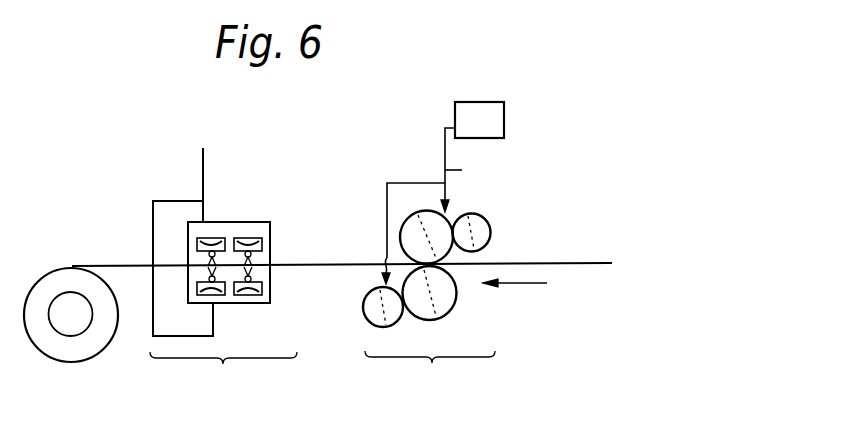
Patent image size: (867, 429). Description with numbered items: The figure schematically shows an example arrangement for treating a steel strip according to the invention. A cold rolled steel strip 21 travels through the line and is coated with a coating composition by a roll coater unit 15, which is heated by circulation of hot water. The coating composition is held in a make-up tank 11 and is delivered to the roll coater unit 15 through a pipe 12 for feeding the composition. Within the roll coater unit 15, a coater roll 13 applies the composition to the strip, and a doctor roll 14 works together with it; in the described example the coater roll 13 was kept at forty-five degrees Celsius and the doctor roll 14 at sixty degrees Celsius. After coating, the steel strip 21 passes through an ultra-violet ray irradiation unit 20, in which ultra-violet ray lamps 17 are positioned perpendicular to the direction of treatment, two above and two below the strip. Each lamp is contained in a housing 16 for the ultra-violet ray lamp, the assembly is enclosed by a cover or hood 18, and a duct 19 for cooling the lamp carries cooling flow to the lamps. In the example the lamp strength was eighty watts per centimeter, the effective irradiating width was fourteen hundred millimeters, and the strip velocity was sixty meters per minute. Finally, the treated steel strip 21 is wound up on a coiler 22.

The make-up tank 11 is at (476, 102).
The pipe 12 is at (411, 183).
The coater roll 13 is at (406, 221).
The doctor roll 14 is at (490, 226).
The roll coater unit 15 is at (430, 373).
The housing for the ultra-violet ray lamp 16 is at (256, 240).
The ultra-violet ray lamps 17 is at (243, 238).
The cover or hood 18 is at (270, 230).
The duct for cooling the lamp 19 is at (167, 201).
The ultra-violet ray irradiation unit 20 is at (223, 375).
The cold rolled steel strip 21 is at (549, 263).
The coiler 22 is at (72, 267).